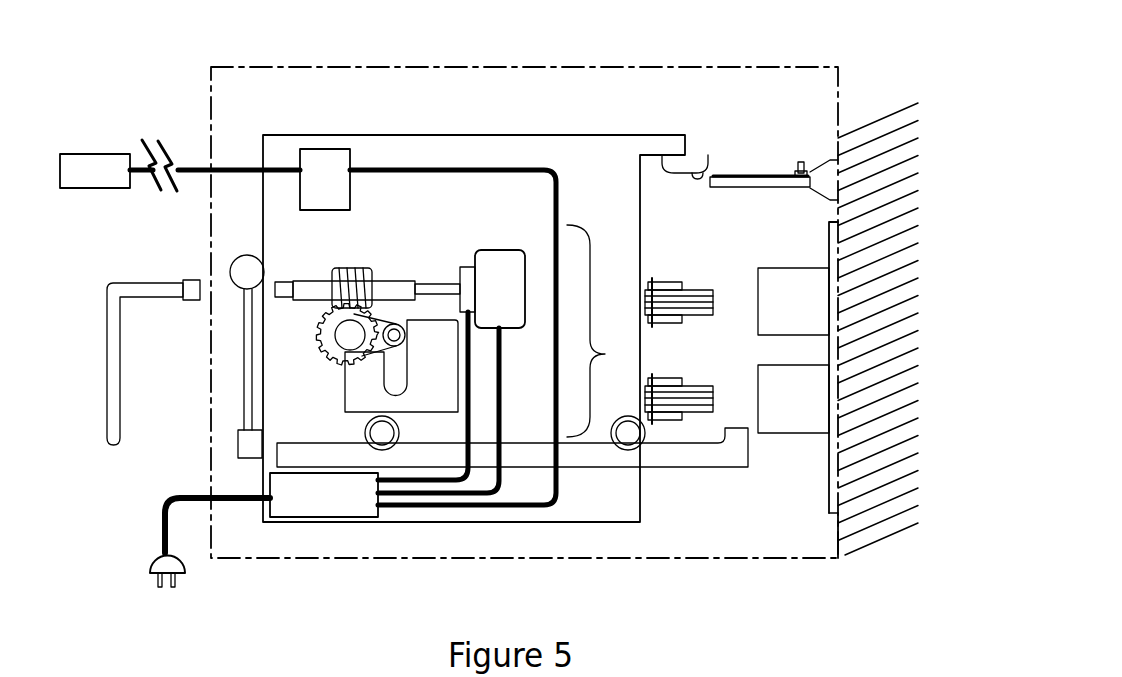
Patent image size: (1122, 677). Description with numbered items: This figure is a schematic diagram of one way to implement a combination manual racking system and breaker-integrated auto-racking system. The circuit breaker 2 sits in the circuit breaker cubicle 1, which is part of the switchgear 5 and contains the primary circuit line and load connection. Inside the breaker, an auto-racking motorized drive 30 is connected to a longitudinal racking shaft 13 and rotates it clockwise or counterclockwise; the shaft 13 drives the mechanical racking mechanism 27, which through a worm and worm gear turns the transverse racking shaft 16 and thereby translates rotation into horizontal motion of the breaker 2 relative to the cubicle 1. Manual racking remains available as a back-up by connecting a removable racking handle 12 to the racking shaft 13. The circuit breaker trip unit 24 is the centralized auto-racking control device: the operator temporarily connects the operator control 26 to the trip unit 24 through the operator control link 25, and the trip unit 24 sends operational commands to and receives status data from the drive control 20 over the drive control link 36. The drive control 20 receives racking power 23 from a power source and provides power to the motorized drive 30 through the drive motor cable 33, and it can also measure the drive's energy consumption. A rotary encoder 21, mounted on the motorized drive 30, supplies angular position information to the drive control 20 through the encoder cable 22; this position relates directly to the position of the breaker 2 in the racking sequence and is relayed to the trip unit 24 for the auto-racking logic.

The circuit breaker cubicle 1 is at (500, 67).
The circuit breaker 2 is at (368, 133).
The switchgear 5 is at (902, 243).
The racking handle 12 is at (127, 283).
The racking shaft 13 is at (312, 280).
The racking shaft 16 is at (322, 330).
The drive control 20 is at (327, 517).
The encoder 21 is at (470, 265).
The encoder cable 22 is at (470, 395).
The racking power 23 is at (166, 517).
The circuit breaker trip unit 24 is at (327, 150).
The operator control link 25 is at (199, 170).
The operator control 26 is at (85, 153).
The mechanical racking mechanism 27 is at (605, 354).
The motorized drive 30 is at (501, 250).
The drive motor cable 33 is at (498, 438).
The drive control link 36 is at (512, 508).